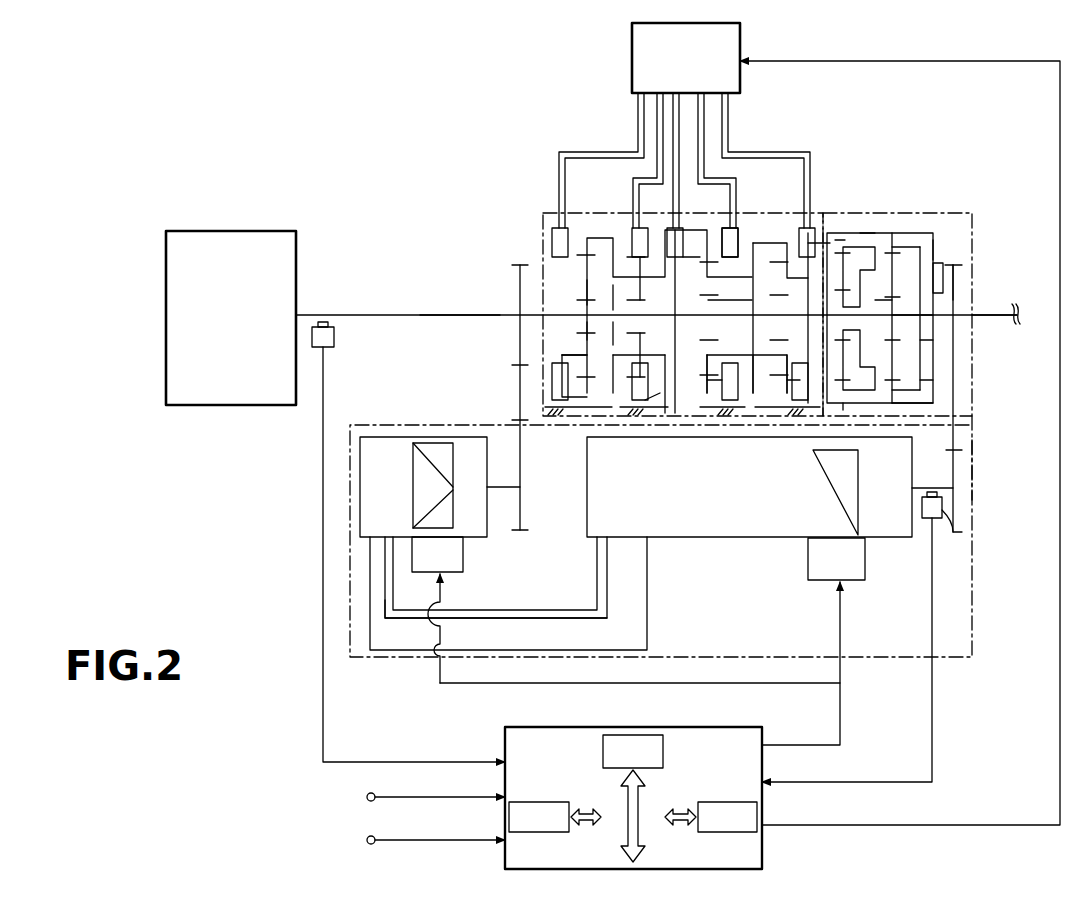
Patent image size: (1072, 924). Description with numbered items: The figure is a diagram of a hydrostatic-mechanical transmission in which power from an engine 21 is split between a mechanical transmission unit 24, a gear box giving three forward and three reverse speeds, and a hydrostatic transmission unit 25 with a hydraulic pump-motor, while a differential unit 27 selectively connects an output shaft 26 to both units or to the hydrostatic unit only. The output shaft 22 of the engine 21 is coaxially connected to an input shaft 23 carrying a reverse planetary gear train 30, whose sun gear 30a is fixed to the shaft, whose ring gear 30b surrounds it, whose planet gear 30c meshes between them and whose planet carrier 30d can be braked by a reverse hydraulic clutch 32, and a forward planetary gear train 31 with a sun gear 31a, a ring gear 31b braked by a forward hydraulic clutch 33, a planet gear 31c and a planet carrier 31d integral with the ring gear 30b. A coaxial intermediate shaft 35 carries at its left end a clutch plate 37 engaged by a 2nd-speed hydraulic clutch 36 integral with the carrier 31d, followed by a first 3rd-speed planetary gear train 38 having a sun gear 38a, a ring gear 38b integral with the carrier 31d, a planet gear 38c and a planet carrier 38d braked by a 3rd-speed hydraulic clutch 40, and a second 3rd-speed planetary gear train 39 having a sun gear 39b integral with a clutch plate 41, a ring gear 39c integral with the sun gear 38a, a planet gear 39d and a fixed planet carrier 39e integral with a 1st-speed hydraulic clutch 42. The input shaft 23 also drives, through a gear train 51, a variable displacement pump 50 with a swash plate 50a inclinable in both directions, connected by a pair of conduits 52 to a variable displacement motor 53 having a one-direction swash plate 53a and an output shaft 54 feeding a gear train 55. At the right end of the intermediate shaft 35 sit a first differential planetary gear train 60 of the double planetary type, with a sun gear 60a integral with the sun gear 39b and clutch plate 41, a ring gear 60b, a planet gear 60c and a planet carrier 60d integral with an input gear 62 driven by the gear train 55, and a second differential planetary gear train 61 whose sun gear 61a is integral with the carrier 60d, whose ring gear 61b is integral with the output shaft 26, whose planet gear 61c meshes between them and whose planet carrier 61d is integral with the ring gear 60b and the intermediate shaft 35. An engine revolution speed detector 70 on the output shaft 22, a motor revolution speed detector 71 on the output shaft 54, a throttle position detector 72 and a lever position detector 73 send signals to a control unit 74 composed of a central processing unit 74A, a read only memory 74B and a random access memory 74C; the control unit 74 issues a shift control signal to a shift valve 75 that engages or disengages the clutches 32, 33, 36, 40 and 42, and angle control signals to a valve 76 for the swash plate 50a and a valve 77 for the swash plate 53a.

The engine 21 is at (262, 231).
The output shaft 22 is at (330, 315).
The input shaft 23 is at (470, 315).
The mechanical transmission unit 24 is at (548, 215).
The hydrostatic transmission unit 25 is at (973, 562).
The output shaft 26 is at (990, 315).
The differential unit 27 is at (953, 213).
The reverse planetary gear train 30 is at (596, 323).
The sun gear 30a is at (600, 332).
The ring gear 30b is at (575, 408).
The planet gear 30c is at (600, 290).
The planet carrier 30d is at (585, 353).
The forward planetary gear train 31 is at (557, 343).
The sun gear 31a is at (613, 345).
The ring gear 31b is at (648, 400).
The planet gear 31c is at (585, 300).
The planet carrier 31d is at (615, 402).
The reverse hydraulic clutch 32 is at (556, 226).
The forward hydraulic clutch 33 is at (634, 228).
The intermediate shaft 35 is at (683, 288).
The 2nd-speed hydraulic clutch 36 is at (686, 226).
The clutch plate 37 is at (683, 236).
The first 3rd-speed planetary gear train 38 is at (735, 317).
The sun gear 38a is at (685, 400).
The ring gear 38b is at (730, 400).
The planet gear 38c is at (712, 400).
The planet carrier 38d is at (767, 400).
The second 3rd-speed planetary gear train 39 is at (776, 325).
The sun gear 39b is at (780, 296).
The ring gear 39c is at (790, 400).
The planet gear 39d is at (787, 400).
The fixed planet carrier 39e is at (795, 410).
The 3rd-speed hydraulic clutch 40 is at (744, 227).
The clutch plate 41 is at (756, 239).
The 1st-speed hydraulic clutch 42 is at (803, 226).
The variable displacement pump 50 is at (495, 502).
The discharge controlling variable-angle swash plate 50a is at (438, 443).
The gear train 51 is at (522, 397).
The conduits 52 is at (531, 608).
The variable displacement motor 53 is at (770, 514).
The discharge controlling variable-angle swash plate 53a is at (843, 482).
The output shaft 54 is at (934, 490).
The gear train 55 is at (957, 468).
The first differential planetary gear train 60 is at (923, 293).
The sun gear 60a is at (947, 235).
The ring gear 60b is at (867, 227).
The planet gear 60c is at (840, 240).
The planet carrier 60d is at (842, 405).
The second differential planetary gear train 61 is at (961, 309).
The sun gear 61a is at (878, 302).
The ring gear 61b is at (908, 382).
The planet gear 61c is at (935, 330).
The planet carrier 61d is at (890, 408).
The input gear 62 is at (953, 278).
The engine revolution speed detector 70 is at (334, 336).
The motor revolution speed detector 71 is at (944, 530).
The throttle position detector 72 is at (367, 797).
The lever position detector 73 is at (367, 840).
The control unit 74 is at (782, 486).
The central processing unit 74A is at (663, 755).
The read only memory 74B is at (540, 802).
The random access memory 74C is at (722, 832).
The shift valve 75 is at (632, 52).
The valve 76 is at (460, 553).
The valve 77 is at (865, 560).